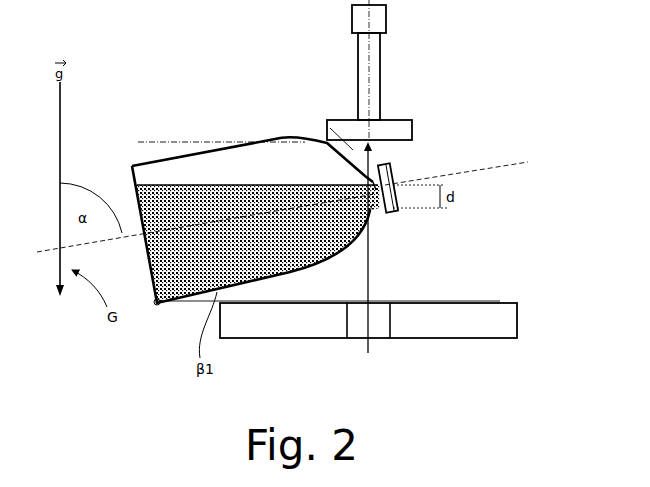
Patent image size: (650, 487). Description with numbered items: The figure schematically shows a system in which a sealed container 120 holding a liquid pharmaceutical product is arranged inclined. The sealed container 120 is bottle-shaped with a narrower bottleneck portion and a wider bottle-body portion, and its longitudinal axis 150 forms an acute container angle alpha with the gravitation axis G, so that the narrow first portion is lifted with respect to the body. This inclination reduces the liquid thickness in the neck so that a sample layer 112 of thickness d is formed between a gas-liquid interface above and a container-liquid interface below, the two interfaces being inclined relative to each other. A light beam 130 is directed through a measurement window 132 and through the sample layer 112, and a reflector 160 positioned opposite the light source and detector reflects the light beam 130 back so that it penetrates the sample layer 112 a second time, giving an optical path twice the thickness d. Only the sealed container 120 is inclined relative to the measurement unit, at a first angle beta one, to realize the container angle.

The sample layer 112 is at (395, 213).
The sealed container 120 is at (176, 156).
The light beam 130 is at (361, 347).
The measurement window 132 is at (380, 345).
The longitudinal axis 150 is at (485, 167).
The reflector 160 is at (405, 118).